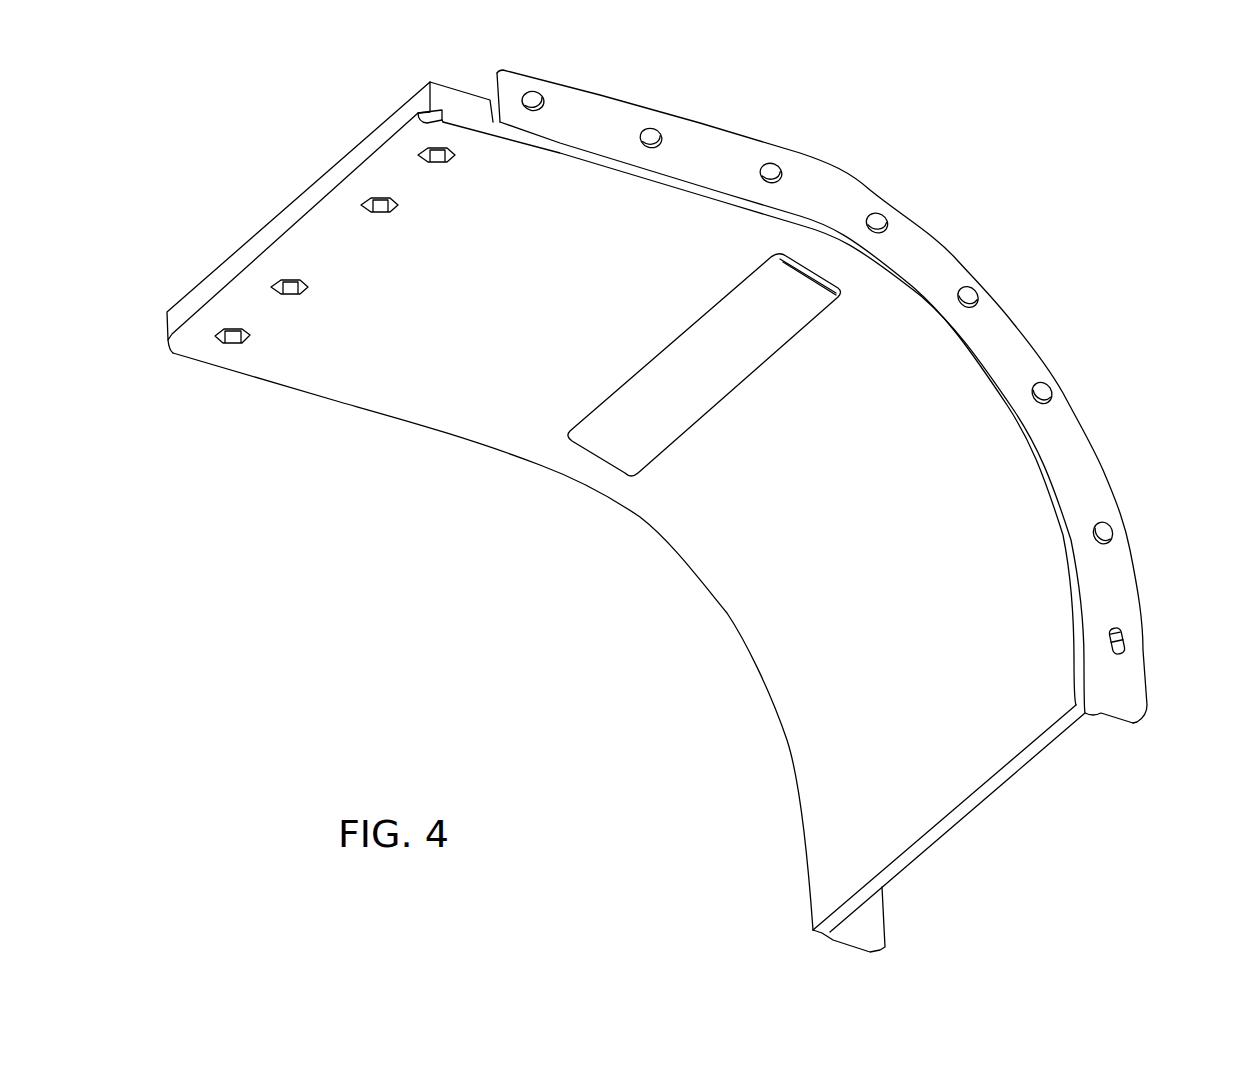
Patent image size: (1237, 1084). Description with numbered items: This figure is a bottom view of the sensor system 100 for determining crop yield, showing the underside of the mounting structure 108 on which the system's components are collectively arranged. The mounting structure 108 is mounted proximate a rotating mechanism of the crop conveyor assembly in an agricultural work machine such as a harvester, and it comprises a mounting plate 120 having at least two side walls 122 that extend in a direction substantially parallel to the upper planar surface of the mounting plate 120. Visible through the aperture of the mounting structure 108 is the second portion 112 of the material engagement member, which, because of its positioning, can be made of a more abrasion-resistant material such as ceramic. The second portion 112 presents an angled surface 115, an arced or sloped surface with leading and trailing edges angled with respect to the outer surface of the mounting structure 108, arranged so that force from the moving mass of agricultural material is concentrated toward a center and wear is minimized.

The sensor system 100 is at (1106, 127).
The mounting structure 108 is at (267, 395).
The second portion 112 is at (627, 422).
The angled surface 115 is at (722, 378).
The mounting plate 120 is at (397, 125).
The side walls 122 is at (558, 102).